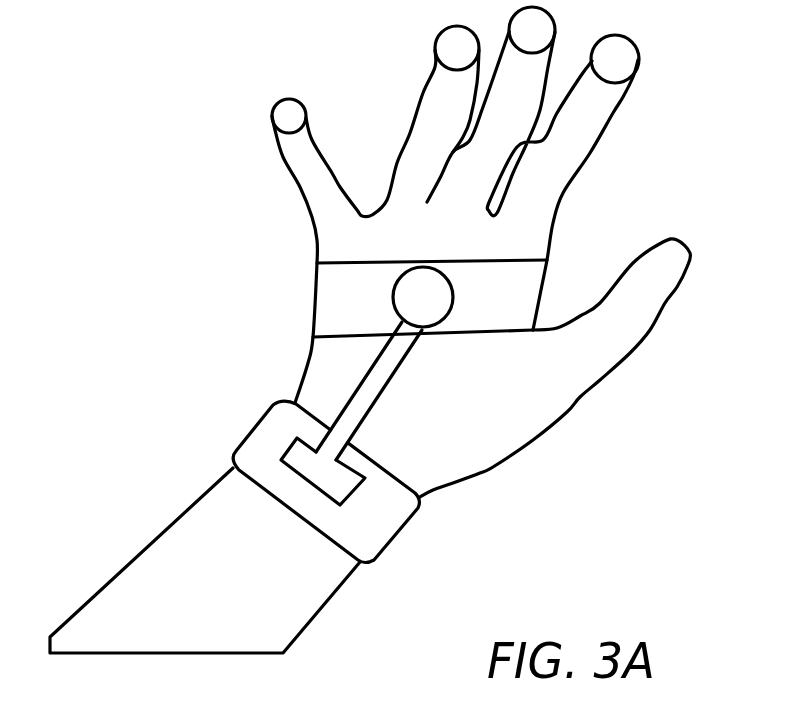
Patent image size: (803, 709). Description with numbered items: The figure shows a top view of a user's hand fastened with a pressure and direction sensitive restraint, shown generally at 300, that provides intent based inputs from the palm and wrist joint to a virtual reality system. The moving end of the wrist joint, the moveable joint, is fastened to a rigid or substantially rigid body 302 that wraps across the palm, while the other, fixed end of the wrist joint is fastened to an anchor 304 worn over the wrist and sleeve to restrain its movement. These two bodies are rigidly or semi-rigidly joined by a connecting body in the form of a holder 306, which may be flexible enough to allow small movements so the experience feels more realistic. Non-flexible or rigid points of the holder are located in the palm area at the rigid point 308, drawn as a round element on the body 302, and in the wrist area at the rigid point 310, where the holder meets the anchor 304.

The wearable device system on user's hand 300 is at (147, 68).
The rigid or substantially rigid body 302 is at (338, 282).
The anchor 304 is at (270, 437).
The holder 306 is at (370, 393).
The non-flexible or rigid point in palm area 308 is at (453, 307).
The non-flexible or rigid point in wrist area 310 is at (290, 473).